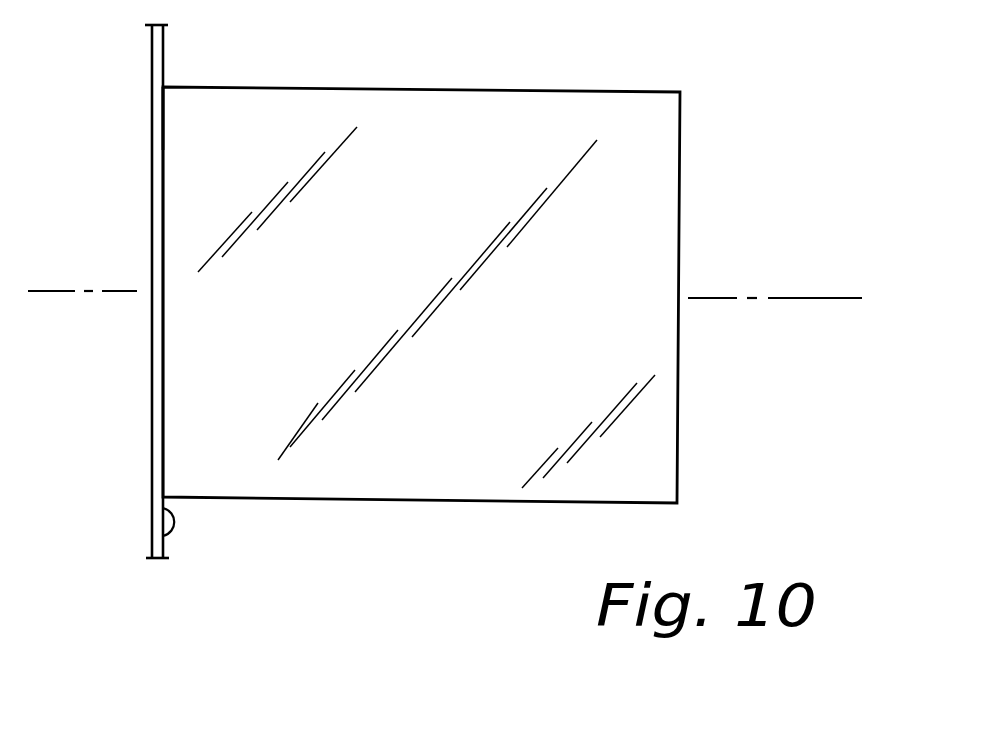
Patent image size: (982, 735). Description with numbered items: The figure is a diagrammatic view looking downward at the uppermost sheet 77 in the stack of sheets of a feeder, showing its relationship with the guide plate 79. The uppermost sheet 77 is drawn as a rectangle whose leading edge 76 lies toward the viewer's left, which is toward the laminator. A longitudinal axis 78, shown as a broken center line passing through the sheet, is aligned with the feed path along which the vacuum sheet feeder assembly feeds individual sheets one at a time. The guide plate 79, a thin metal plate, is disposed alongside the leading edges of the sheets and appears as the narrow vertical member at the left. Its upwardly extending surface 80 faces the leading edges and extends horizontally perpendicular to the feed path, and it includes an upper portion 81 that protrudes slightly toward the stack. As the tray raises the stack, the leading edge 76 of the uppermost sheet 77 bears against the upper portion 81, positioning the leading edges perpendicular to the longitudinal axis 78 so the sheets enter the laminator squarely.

The leading edge 76 is at (163, 143).
The uppermost sheet 77 is at (372, 127).
The longitudinal axis 78 is at (65, 291).
The guide plate 79 is at (152, 62).
The upwardly extending surface 80 is at (161, 511).
The upper portion 81 is at (154, 248).